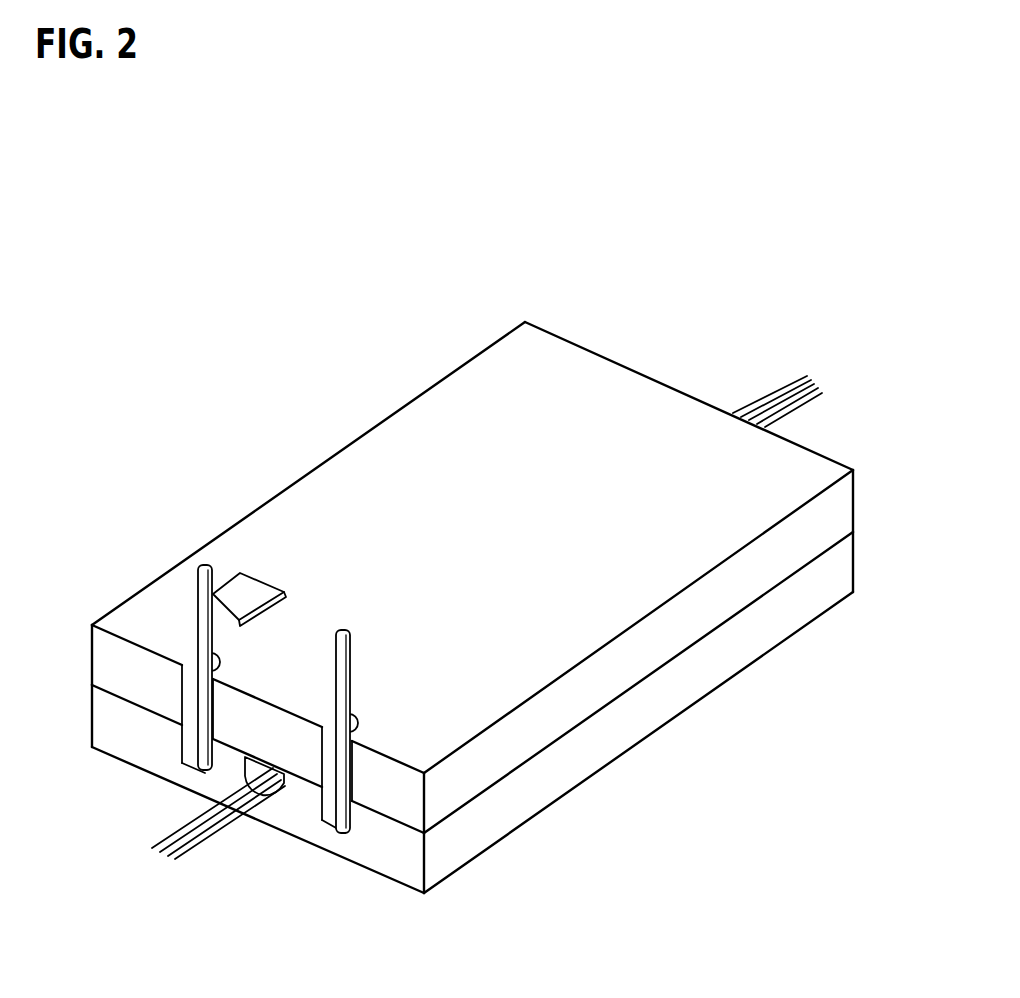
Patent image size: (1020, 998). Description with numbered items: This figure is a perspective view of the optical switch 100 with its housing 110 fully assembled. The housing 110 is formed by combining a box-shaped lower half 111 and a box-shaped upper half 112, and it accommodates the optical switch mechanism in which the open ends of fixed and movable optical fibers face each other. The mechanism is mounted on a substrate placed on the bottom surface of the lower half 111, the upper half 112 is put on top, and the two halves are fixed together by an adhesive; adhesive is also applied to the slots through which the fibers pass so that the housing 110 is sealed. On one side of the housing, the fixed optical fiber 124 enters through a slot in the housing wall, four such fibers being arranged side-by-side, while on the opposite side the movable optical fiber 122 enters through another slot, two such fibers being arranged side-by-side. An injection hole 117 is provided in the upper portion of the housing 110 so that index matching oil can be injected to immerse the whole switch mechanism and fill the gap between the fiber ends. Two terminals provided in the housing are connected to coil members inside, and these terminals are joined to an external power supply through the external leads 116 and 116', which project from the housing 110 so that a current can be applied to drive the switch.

The optical switch 100 is at (134, 208).
The housing 110 is at (742, 787).
The lower half 111 is at (548, 783).
The upper half 112 is at (537, 707).
The external lead 116 is at (132, 698).
The external lead 116' is at (434, 784).
The injection hole 117 is at (244, 590).
The movable optical fiber 122 is at (210, 822).
The fixed optical fiber 124 is at (789, 380).